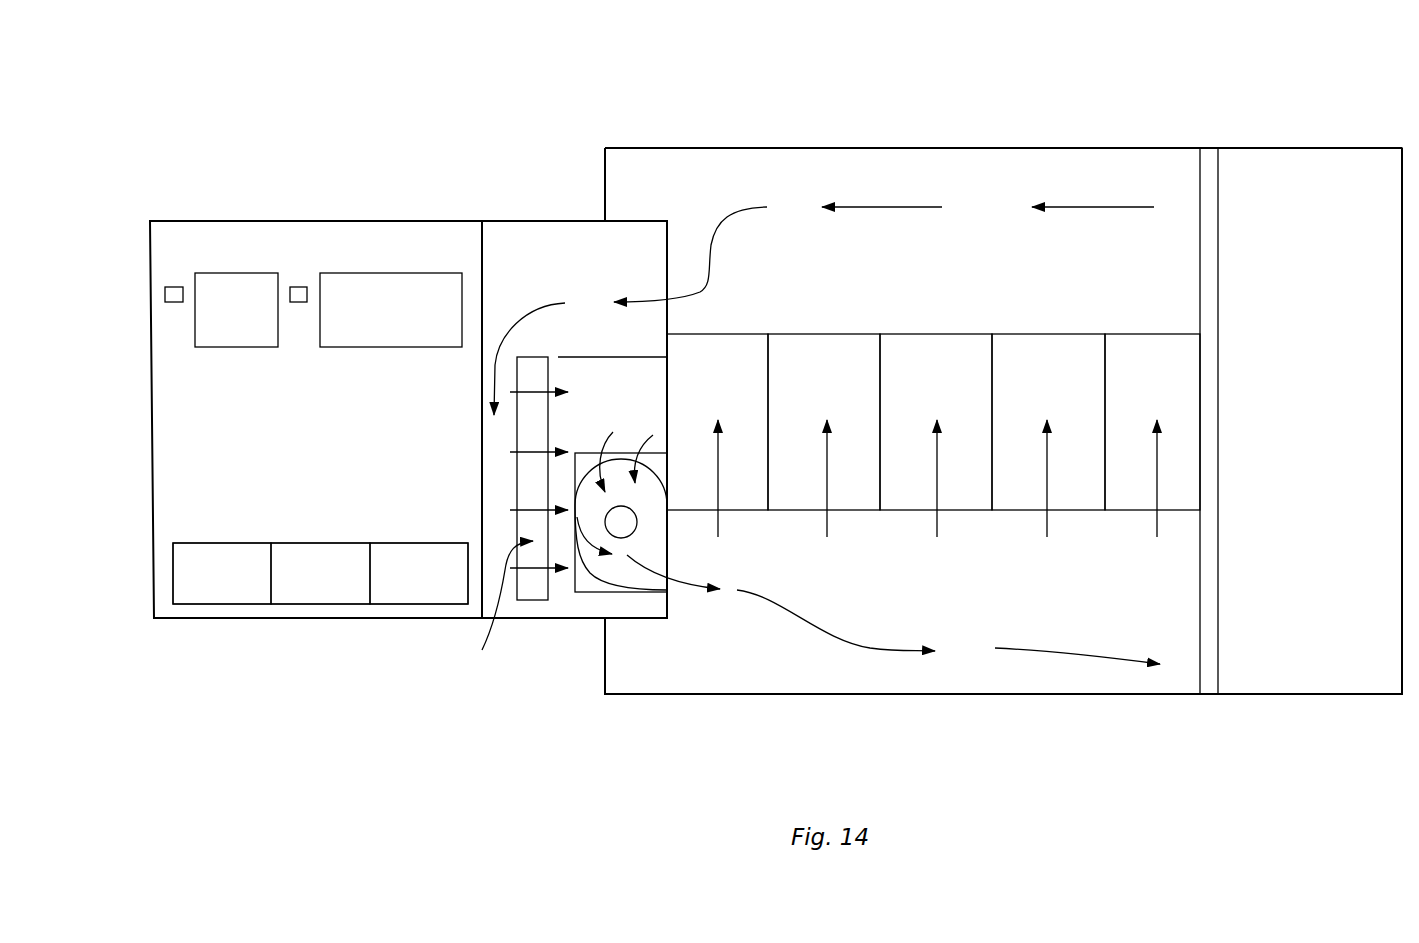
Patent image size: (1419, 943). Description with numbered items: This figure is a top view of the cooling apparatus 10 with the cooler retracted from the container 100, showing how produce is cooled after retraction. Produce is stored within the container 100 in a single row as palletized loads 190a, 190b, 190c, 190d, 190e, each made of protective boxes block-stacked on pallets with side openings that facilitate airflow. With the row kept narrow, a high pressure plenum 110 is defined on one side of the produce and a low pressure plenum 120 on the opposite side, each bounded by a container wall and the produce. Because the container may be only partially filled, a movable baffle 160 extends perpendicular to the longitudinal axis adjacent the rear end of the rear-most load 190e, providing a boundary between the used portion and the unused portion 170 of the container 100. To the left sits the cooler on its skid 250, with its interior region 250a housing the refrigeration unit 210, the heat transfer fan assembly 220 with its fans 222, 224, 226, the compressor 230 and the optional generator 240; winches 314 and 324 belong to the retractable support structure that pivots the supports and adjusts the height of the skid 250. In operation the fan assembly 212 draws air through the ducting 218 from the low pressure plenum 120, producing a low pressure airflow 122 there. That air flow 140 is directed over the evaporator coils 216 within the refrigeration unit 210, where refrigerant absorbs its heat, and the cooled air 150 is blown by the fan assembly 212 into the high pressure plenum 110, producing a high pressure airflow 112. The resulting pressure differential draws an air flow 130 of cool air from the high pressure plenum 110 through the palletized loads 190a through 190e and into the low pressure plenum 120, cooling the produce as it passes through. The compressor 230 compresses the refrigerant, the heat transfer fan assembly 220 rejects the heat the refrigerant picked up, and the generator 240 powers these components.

The system 10 is at (791, 110).
The container 100 is at (1118, 145).
The high pressure plenum 110 is at (952, 666).
The high pressure airflow 112 is at (858, 642).
The low pressure plenum 120 is at (968, 177).
The low pressure airflow 122 is at (707, 258).
The air flow 130 is at (938, 471).
The air flow 140 is at (542, 568).
The cooled air 150 is at (655, 580).
The movable baffle 160 is at (1218, 213).
The unused portion 170 is at (1310, 421).
The palletized load 190a is at (717, 422).
The palletized load 190b is at (824, 422).
The palletized load 190c is at (936, 422).
The palletized load 190d is at (1048, 422).
The palletized load 190e is at (1152, 422).
The refrigeration unit 210 is at (593, 350).
The fan assembly 212 is at (598, 586).
The evaporator coils 216 is at (500, 628).
The ducting 218 is at (497, 481).
The heat transfer fan assembly 220 is at (170, 579).
The fan 222 is at (222, 573).
The fan 224 is at (320, 573).
The fan 226 is at (419, 573).
The compressor 230 is at (391, 310).
The generator 240 is at (236, 310).
The skid 250 is at (373, 220).
The enclosure interior 250a is at (305, 429).
The winch 314 is at (178, 286).
The winch 324 is at (302, 286).